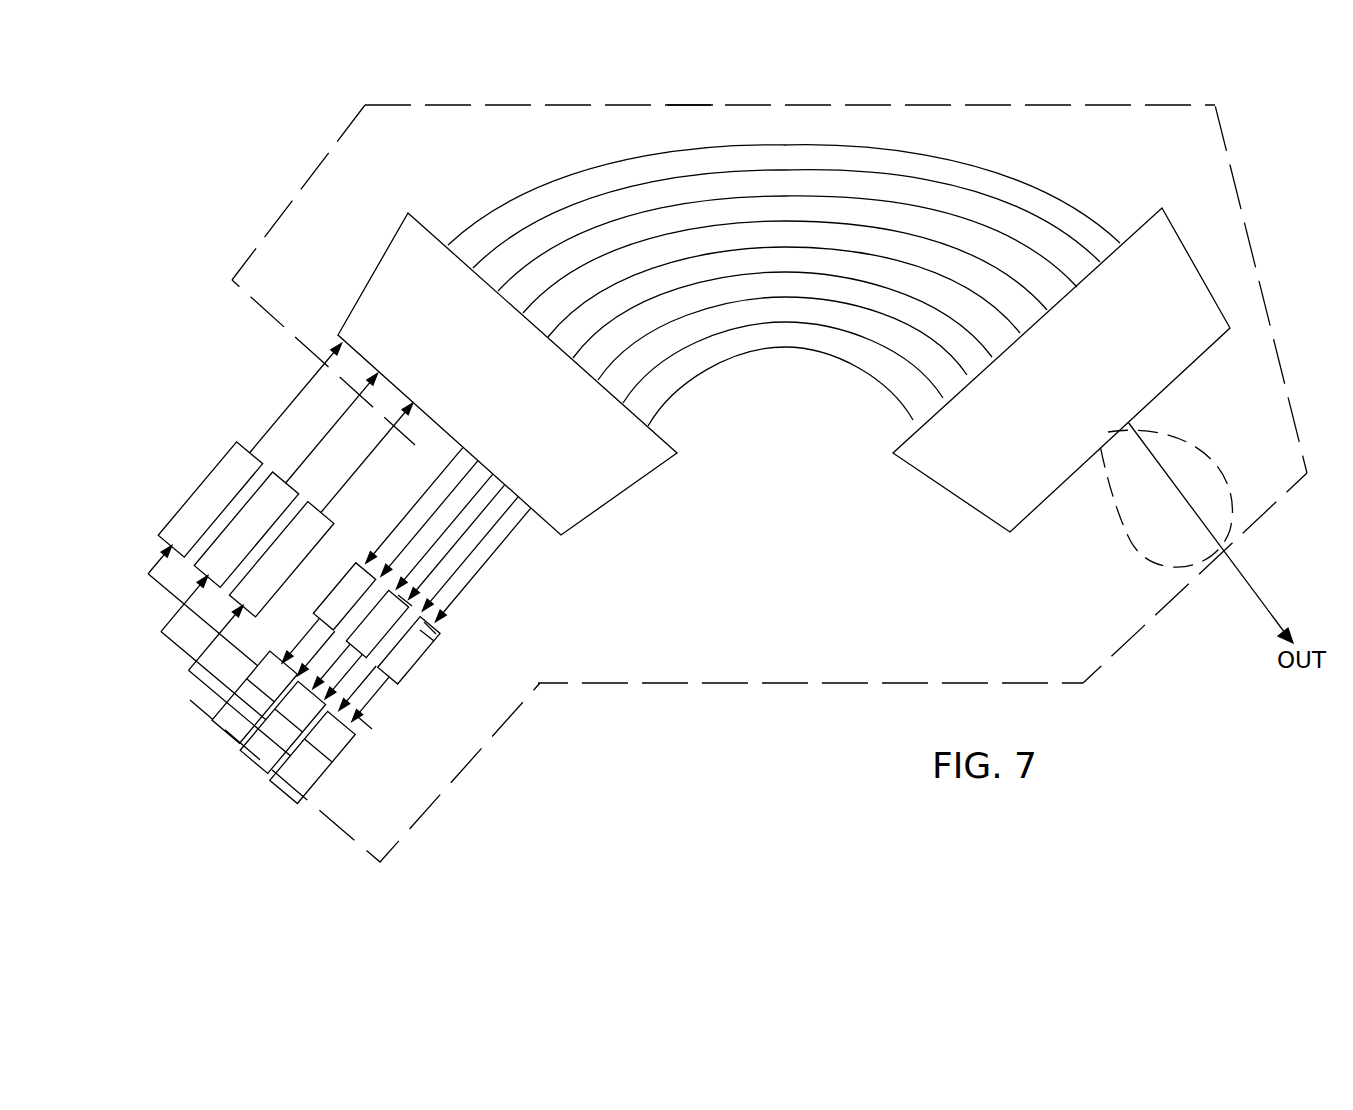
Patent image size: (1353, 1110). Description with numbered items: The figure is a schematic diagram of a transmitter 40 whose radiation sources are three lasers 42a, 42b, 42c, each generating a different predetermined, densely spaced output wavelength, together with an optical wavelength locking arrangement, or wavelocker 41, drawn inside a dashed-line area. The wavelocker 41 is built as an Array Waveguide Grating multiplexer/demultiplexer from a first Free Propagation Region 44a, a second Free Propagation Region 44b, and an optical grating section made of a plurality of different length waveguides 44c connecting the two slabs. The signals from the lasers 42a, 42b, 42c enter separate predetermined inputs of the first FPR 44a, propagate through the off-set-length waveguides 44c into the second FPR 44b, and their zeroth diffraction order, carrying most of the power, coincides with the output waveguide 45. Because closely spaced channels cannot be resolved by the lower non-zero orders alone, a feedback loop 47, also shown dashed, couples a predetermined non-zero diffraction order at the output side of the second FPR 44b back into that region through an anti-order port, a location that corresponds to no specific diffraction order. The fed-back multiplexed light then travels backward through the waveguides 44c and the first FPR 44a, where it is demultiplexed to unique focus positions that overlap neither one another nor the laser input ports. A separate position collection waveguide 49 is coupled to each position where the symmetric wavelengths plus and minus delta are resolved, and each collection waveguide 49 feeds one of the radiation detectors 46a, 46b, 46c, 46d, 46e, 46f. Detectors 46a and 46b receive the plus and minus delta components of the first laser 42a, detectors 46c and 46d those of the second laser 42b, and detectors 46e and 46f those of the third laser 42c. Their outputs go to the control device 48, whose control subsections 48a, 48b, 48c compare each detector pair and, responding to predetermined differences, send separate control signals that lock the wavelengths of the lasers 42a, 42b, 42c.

The transmitter 40 is at (539, 96).
The optical wavelength locking arrangement (wavelocker) 41 is at (695, 105).
The first laser 42a is at (214, 470).
The second laser 42b is at (275, 471).
The third laser 42c is at (308, 503).
The first Free Propagation Region 44a is at (375, 270).
The second Free Propagation Region 44b is at (1205, 278).
The plurality of different length waveguides 44c is at (873, 222).
The output waveguide 45 is at (1265, 612).
The radiation detector 46a is at (357, 562).
The radiation detector 46b is at (367, 560).
The radiation detector 46c is at (384, 576).
The radiation detector 46d is at (405, 598).
The radiation detector 46e is at (428, 636).
The radiation detector 46f is at (432, 628).
The feedback loop 47 is at (1225, 475).
The control device 48 is at (366, 723).
The control subsection 48a is at (256, 703).
The control subsection 48b is at (300, 730).
The control subsection 48c is at (348, 748).
The position collection waveguides 49 is at (468, 490).